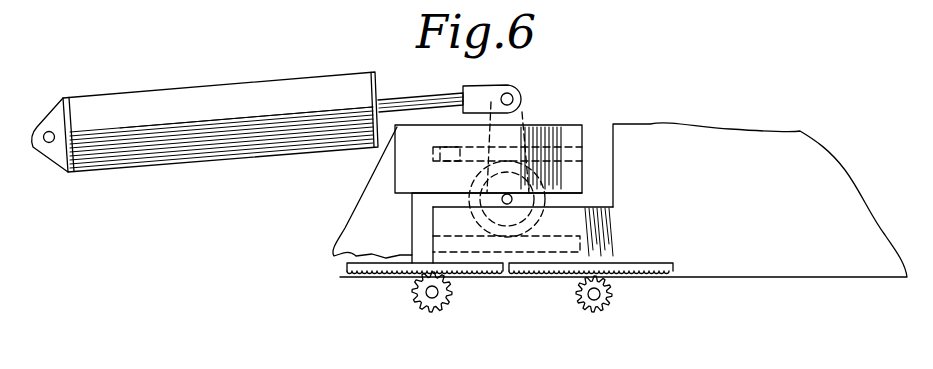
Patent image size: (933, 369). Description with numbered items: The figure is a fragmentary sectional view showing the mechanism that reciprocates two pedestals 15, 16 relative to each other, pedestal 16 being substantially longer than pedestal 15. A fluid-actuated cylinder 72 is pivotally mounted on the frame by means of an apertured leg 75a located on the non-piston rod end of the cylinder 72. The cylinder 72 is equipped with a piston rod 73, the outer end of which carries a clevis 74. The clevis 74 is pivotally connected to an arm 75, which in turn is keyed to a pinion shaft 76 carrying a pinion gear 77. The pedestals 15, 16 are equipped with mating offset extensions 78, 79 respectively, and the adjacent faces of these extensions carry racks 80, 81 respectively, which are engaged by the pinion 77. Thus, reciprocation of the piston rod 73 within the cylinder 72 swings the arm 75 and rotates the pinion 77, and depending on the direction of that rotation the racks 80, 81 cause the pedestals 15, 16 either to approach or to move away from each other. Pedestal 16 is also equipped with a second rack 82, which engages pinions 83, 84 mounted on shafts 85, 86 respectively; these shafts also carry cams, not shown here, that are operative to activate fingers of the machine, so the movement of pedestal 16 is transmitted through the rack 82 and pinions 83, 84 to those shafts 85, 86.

The fluid-actuated cylinder 72 is at (231, 92).
The apertured leg 75a is at (82, 198).
The piston rod 73 is at (400, 101).
The clevis 74 is at (483, 92).
The arm 75 is at (519, 110).
The offset extension 78 is at (577, 130).
The rack 80 is at (447, 141).
The pedestal 15 is at (548, 128).
The pedestal 16 is at (718, 266).
The pinion gear 77 is at (412, 202).
The pinion shaft 76 is at (503, 197).
The rack 81 is at (555, 248).
The offset extension 79 is at (445, 234).
The second rack 82 is at (656, 268).
The pinion 83 is at (418, 306).
The shaft 85 is at (412, 293).
The pinion 84 is at (600, 313).
The shaft 86 is at (600, 294).